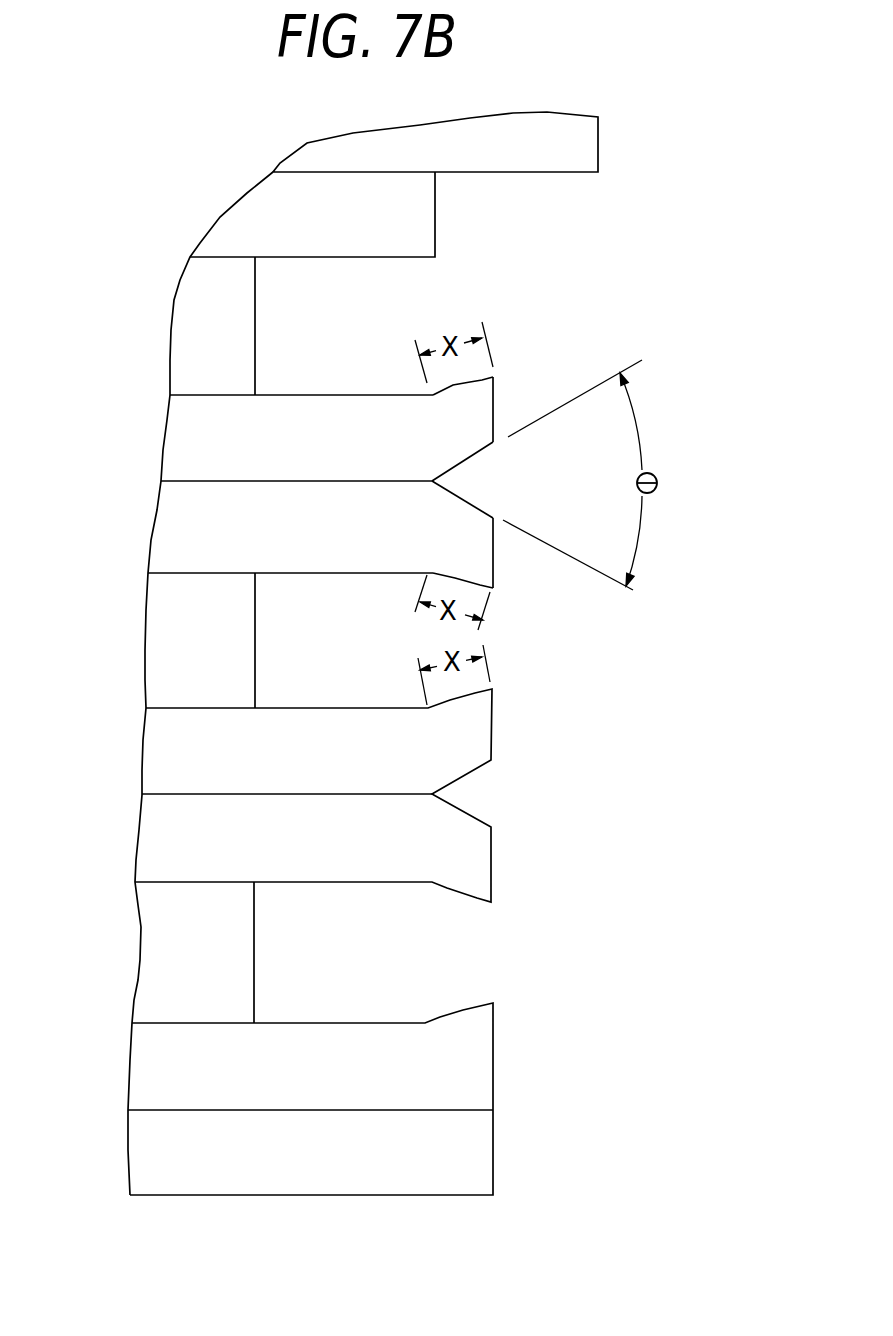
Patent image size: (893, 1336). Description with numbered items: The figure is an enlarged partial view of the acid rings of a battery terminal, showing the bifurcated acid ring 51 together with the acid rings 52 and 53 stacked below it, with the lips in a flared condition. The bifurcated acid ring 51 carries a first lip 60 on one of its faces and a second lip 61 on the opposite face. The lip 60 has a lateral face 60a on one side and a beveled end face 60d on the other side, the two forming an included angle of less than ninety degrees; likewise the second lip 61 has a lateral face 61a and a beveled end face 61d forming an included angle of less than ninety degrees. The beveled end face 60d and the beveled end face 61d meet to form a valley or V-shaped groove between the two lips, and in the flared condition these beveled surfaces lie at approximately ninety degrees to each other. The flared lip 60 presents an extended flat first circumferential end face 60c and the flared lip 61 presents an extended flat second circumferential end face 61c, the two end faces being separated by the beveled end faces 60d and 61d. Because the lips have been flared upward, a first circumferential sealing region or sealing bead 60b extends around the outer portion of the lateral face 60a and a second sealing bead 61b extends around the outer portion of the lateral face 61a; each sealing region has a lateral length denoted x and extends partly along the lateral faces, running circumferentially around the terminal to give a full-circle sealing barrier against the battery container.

The bifurcated acid ring 51 is at (219, 427).
The acid ring 52 is at (178, 755).
The acid ring 53 is at (172, 1065).
The lip 60 is at (477, 402).
The lateral face 60a is at (307, 395).
The sealing bead 60b is at (478, 380).
The circumferential end face 60c is at (493, 407).
The beveled end face 60d is at (472, 457).
The second lip 61 is at (478, 585).
The lateral face 61a is at (325, 573).
The sealing bead 61b is at (485, 593).
The circumferential end face 61c is at (493, 547).
The beveled end face 61d is at (468, 493).